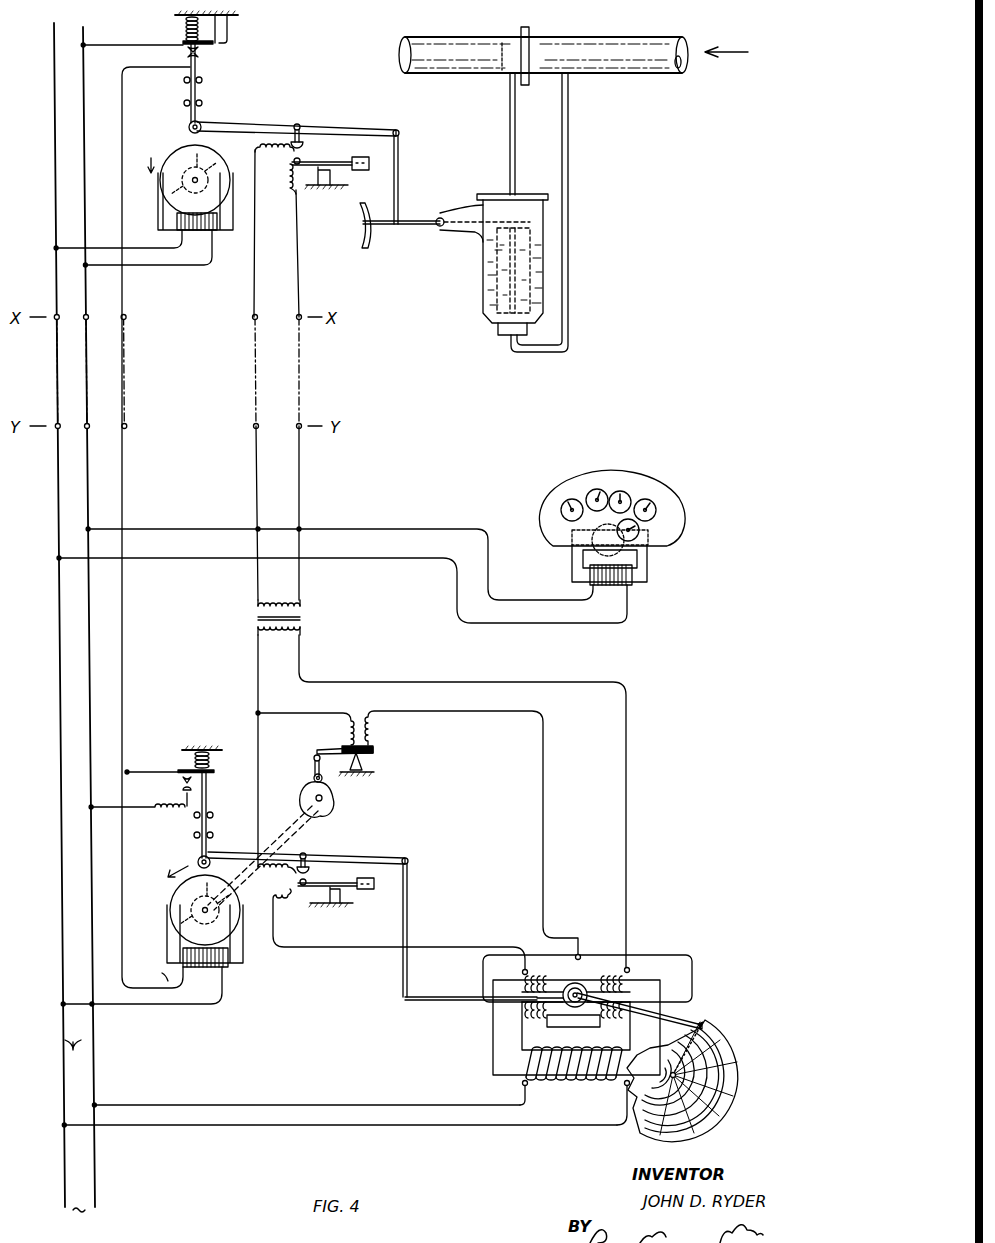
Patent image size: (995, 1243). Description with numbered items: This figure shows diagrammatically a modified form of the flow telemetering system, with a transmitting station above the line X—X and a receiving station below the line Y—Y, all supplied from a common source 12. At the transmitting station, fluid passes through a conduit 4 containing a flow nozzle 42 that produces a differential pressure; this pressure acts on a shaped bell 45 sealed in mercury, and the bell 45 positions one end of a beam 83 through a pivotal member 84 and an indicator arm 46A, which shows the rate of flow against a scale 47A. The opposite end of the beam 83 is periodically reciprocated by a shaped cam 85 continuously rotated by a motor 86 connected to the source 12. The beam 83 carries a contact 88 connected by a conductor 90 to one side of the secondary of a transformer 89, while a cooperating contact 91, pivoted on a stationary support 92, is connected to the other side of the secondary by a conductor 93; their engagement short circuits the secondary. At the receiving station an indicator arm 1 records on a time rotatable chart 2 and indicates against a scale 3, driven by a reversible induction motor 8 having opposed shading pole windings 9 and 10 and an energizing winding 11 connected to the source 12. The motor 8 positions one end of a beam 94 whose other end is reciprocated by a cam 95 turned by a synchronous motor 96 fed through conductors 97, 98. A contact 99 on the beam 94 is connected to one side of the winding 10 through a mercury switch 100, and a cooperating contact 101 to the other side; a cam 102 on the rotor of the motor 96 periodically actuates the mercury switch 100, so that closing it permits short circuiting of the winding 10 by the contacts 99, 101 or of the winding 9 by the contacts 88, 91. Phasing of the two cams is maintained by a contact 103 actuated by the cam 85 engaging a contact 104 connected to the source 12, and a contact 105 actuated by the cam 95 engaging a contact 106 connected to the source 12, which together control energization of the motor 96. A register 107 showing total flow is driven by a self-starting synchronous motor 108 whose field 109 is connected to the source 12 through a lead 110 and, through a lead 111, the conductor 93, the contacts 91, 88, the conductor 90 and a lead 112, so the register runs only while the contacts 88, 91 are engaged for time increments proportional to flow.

The indicator arm 1 is at (636, 1025).
The time rotatable chart 2 is at (740, 1053).
The scale 3 is at (716, 1029).
The conduit 4 is at (440, 26).
The reversible induction motor 8 is at (665, 982).
The shading pole winding 9 is at (604, 995).
The shading pole winding 10 is at (522, 1009).
The energizing winding 11 is at (584, 1080).
The source 12 is at (74, 617).
The flow nozzle 42 is at (530, 42).
The shaped bell 45 is at (553, 222).
The indicator arm 46A is at (410, 232).
The scale 47A is at (352, 232).
The beam 83 is at (328, 128).
The member 84 is at (400, 165).
The shaped cam 85 is at (182, 149).
The motor 86 is at (160, 217).
The contact 88 is at (305, 148).
The transformer 89 is at (259, 617).
The conductor 90 is at (243, 466).
The cooperating contact 91 is at (280, 152).
The stationary support 92 is at (340, 176).
The conductor 93 is at (305, 466).
The beam 94 is at (343, 858).
The cam 95 is at (178, 892).
The synchronous motor 96 is at (243, 945).
The conductor 97 is at (154, 976).
The conductor 98 is at (165, 1004).
The contact 99 is at (312, 872).
The mercury switch 100 is at (378, 750).
The cooperating contact 101 is at (294, 881).
The cam 102 is at (333, 792).
The contact 103 is at (200, 58).
The contact 104 is at (185, 50).
The contact 105 is at (182, 779).
The contact 106 is at (180, 790).
The register 107 is at (676, 493).
The self-starting synchronous motor 108 is at (650, 562).
The field 109 is at (634, 587).
The lead 110 is at (522, 623).
The lead 111 is at (398, 529).
The lead 112 is at (164, 521).